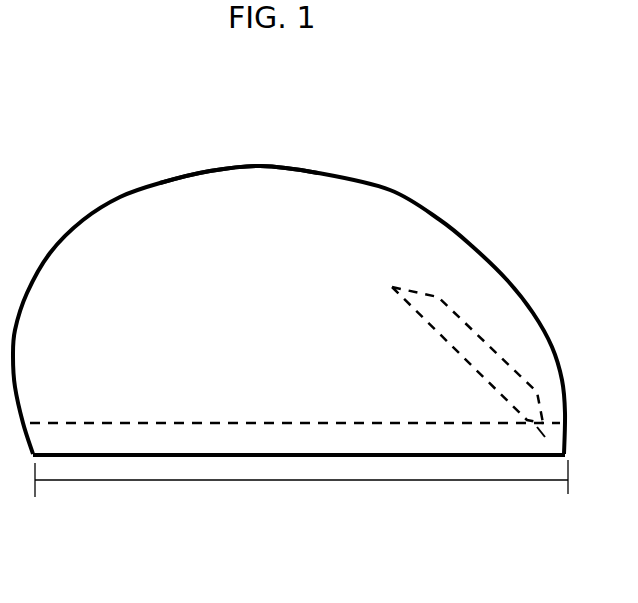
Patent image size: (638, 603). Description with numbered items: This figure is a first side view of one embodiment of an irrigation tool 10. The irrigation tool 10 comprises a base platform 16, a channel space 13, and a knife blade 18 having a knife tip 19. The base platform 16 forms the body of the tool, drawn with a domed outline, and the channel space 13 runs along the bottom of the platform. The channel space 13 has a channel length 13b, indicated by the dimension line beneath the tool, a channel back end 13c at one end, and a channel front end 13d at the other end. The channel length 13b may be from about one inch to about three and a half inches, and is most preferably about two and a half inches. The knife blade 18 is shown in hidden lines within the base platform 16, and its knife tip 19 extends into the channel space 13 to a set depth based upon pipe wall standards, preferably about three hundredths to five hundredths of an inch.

The irrigation tool 10 is at (58, 108).
The channel space 13 is at (297, 505).
The channel length 13b is at (301, 523).
The channel back end 13c is at (86, 514).
The channel front end 13d is at (535, 511).
The base platform 16 is at (238, 151).
The knife blade 18 is at (442, 261).
The knife tip 19 is at (485, 508).